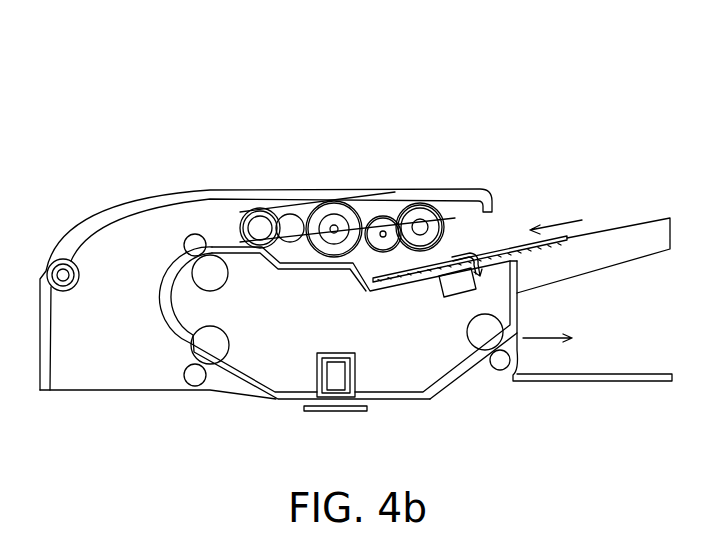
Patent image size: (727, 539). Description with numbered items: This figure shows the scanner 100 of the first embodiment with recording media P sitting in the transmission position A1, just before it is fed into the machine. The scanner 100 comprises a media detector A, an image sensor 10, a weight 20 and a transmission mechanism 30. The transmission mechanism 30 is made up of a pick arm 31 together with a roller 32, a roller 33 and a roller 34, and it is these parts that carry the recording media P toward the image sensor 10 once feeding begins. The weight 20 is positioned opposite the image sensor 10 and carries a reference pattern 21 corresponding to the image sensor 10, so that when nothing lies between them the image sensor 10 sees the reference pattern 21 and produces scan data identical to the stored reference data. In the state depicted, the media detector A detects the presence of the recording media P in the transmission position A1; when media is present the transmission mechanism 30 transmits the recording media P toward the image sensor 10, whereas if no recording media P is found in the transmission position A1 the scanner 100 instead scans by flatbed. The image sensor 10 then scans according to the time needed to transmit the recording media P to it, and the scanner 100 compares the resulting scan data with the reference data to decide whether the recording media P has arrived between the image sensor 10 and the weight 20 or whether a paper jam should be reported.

The scanner 100 is at (57, 44).
The transmission mechanism 30 is at (515, 109).
The pick arm 31 is at (420, 224).
The roller 32 is at (199, 243).
The roller 33 is at (193, 373).
The roller 34 is at (515, 355).
The reference pattern 21 is at (322, 397).
The weight 20 is at (335, 375).
The image sensor 10 is at (336, 411).
The media detector A is at (462, 289).
The transmission position A1 is at (637, 273).
The recording media P is at (521, 259).